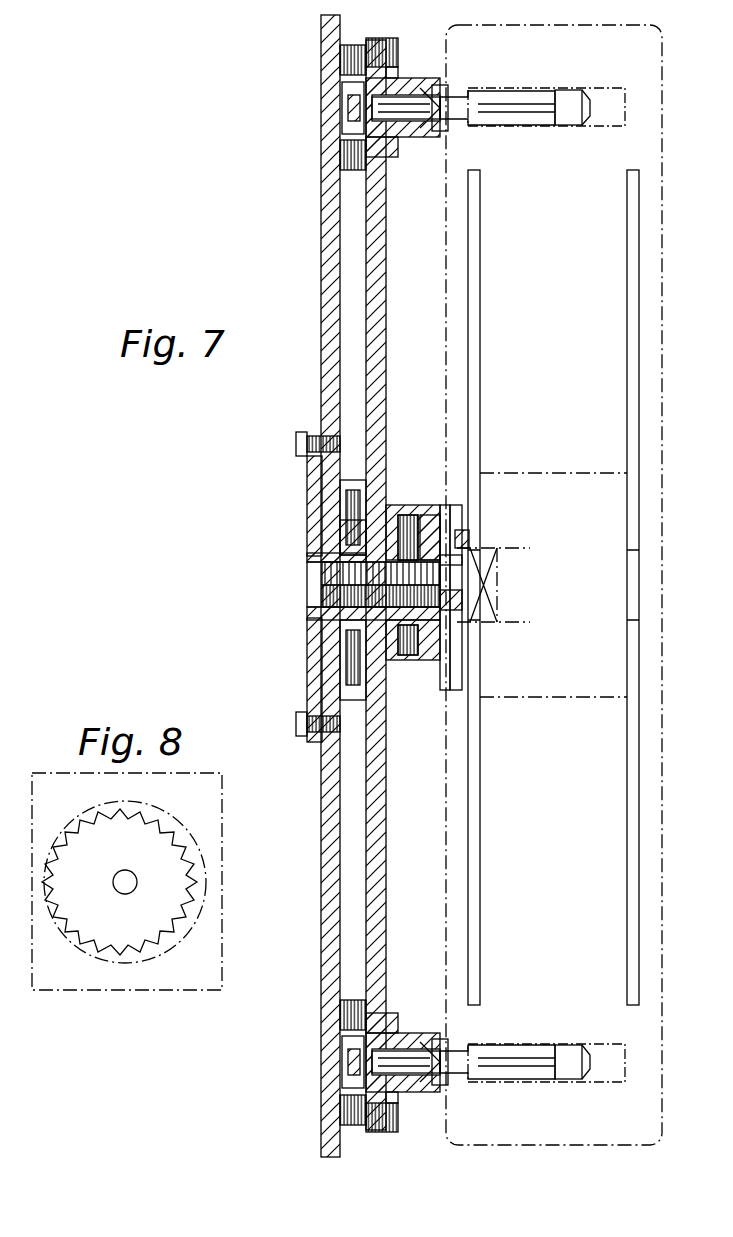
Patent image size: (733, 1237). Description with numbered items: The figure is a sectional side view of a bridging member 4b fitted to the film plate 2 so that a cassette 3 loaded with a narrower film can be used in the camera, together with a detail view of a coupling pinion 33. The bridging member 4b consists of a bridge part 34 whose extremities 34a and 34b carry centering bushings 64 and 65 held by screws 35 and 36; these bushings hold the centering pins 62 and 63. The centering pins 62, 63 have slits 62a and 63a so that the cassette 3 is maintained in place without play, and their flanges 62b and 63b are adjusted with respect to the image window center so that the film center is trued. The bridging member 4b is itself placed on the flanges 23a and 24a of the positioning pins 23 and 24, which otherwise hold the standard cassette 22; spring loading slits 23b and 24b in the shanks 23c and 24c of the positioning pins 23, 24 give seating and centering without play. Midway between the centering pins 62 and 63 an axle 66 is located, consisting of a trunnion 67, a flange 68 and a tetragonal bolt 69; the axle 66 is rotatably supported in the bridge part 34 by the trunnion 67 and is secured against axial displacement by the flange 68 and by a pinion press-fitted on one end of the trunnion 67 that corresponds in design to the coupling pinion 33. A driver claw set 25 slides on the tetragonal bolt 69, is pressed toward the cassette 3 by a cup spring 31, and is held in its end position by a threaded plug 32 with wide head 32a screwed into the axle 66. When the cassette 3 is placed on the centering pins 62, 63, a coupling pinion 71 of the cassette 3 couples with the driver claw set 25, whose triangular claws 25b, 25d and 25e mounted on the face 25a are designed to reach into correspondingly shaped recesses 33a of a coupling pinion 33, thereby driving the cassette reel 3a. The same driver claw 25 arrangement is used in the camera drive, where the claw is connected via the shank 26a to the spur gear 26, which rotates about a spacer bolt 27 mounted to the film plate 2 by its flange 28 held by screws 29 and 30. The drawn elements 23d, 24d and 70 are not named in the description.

In FIG. 7, the film plate 2 is at (322, 291).
In FIG. 7, the cassette 3 is at (597, 790).
In FIG. 7, the cassette reel 3a is at (632, 295).
In FIG. 7, the bridging member 4b is at (420, 852).
In FIG. 8, the cassette 22 is at (195, 961).
In FIG. 7, the positioning pin 23 is at (395, 100).
In FIG. 7, the flange 23a is at (345, 118).
In FIG. 7, the spring loading slit 23b is at (345, 105).
In FIG. 7, the shank 23c is at (405, 140).
In FIG. 7, the upper bolt of bearing block 23d is at (345, 95).
In FIG. 7, the positioning pin 24 is at (415, 1090).
In FIG. 7, the flange 24a is at (345, 1075).
In FIG. 7, the spring loading slit 24b is at (345, 1060).
In FIG. 7, the shank 24c is at (407, 1035).
In FIG. 7, the upper bolt of lower bearing block 24d is at (345, 1050).
In FIG. 7, the driver claw set 25 is at (347, 515).
In FIG. 7, the face 25a is at (376, 520).
In FIG. 7, the claw 25b is at (330, 683).
In FIG. 7, the claw 25d is at (373, 508).
In FIG. 7, the claw 25e is at (455, 598).
In FIG. 7, the spur gear 26 is at (312, 650).
In FIG. 7, the shank 26a is at (322, 620).
In FIG. 7, the spacer bolt 27 is at (322, 556).
In FIG. 7, the flange 28 is at (310, 478).
In FIG. 7, the screw 29 is at (296, 446).
In FIG. 7, the screw 30 is at (296, 727).
In FIG. 7, the cup spring 31 is at (345, 528).
In FIG. 7, the threaded plug 32 is at (322, 598).
In FIG. 7, the wide head 32a is at (322, 581).
In FIG. 8, the coupling pinion 33 is at (160, 877).
In FIG. 8, the recess 33a is at (190, 856).
In FIG. 7, the bridge part 34 is at (376, 292).
In FIG. 7, the extremity 34a is at (378, 46).
In FIG. 7, the extremity 34b is at (382, 1132).
In FIG. 7, the screw 35 is at (398, 57).
In FIG. 7, the screw 36 is at (393, 1115).
In FIG. 7, the centering pin 62 is at (567, 125).
In FIG. 7, the slit 62a is at (592, 102).
In FIG. 7, the flange 62b is at (448, 125).
In FIG. 7, the centering pin 63 is at (565, 1052).
In FIG. 7, the slit 63a is at (588, 1082).
In FIG. 7, the flange 63b is at (445, 1048).
In FIG. 7, the centering bushing 64 is at (445, 135).
In FIG. 7, the centering bushing 65 is at (440, 1035).
In FIG. 7, the axle 66 is at (405, 640).
In FIG. 7, the trunnion 67 is at (395, 660).
In FIG. 7, the flange 68 is at (408, 530).
In FIG. 7, the tetragonal bolt 69 is at (478, 565).
In FIG. 7, the collar 70 is at (382, 530).
In FIG. 7, the coupling pinion 71 is at (462, 538).